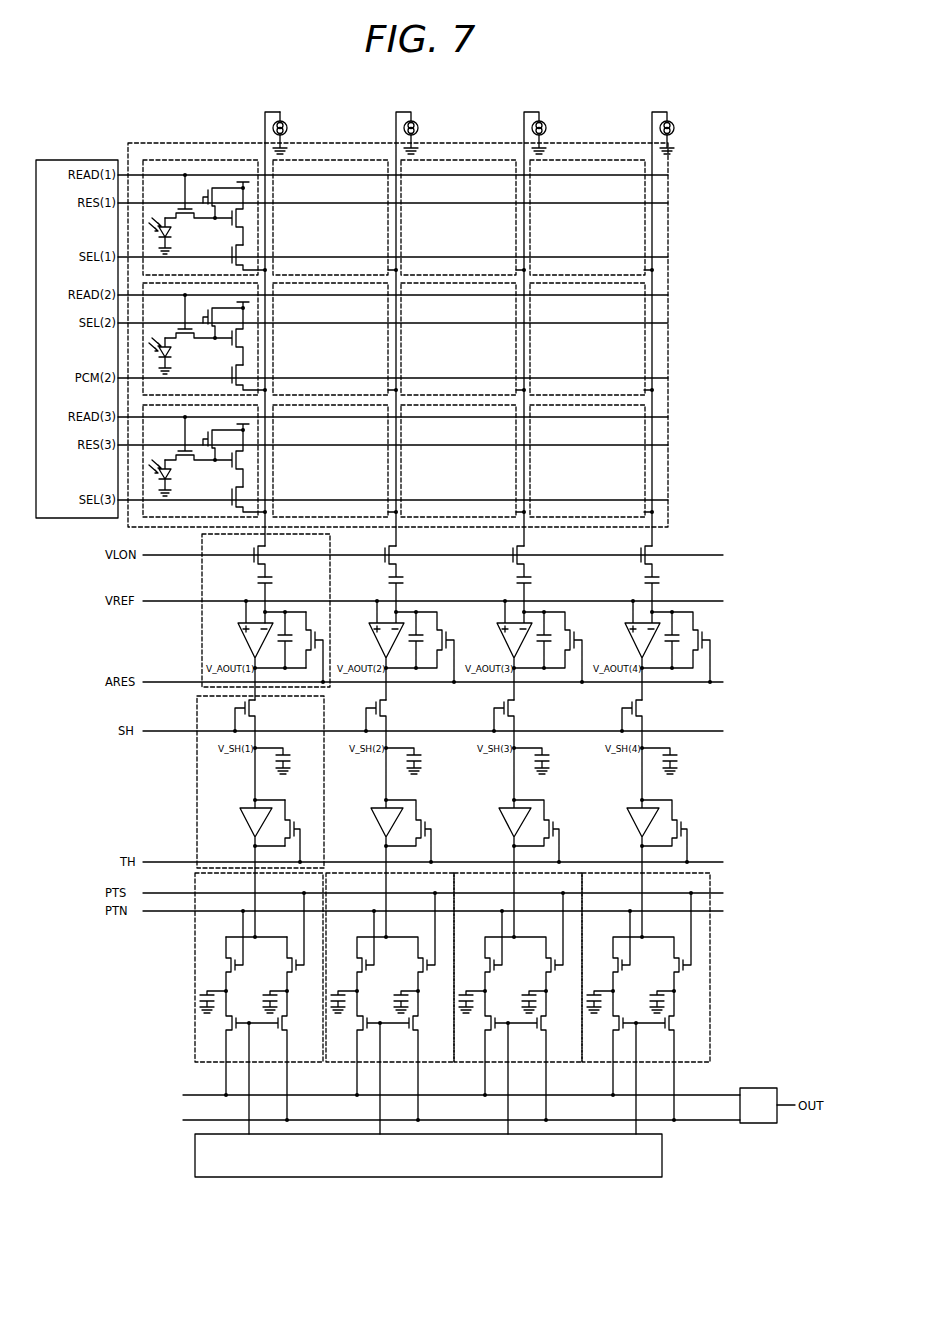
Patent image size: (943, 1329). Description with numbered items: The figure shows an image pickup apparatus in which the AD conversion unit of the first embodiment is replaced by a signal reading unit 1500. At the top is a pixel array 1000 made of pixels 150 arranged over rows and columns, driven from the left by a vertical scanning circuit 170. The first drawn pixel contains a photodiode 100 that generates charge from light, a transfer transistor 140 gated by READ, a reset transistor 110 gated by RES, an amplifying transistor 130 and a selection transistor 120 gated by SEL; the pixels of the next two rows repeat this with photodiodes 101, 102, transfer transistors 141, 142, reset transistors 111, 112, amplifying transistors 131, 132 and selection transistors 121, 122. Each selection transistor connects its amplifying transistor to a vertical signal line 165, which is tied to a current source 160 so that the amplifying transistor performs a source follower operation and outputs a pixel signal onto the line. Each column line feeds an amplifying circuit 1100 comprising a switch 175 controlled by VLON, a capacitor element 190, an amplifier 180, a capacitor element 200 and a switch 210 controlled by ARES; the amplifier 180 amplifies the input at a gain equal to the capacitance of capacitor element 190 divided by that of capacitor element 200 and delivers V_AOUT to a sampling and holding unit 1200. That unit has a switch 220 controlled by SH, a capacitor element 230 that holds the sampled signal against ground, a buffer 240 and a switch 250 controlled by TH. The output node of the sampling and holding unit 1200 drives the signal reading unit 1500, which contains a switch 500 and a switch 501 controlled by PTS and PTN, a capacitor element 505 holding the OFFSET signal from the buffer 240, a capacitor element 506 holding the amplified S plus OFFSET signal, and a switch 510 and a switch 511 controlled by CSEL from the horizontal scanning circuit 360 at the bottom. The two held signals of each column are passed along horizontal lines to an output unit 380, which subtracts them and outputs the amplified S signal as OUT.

The pixel array 1000 is at (158, 143).
The pixel 150 is at (172, 160).
The vertical signal line 165 is at (262, 116).
The current source 160 is at (283, 122).
The vertical scanning circuit 170 is at (36, 400).
The reset transistor 110 is at (207, 196).
The reset transistor 111 is at (219, 317).
The reset transistor 112 is at (219, 439).
The transfer transistor 140 is at (188, 217).
The transfer transistor 141 is at (190, 326).
The transfer transistor 142 is at (190, 448).
The amplifying transistor 130 is at (235, 222).
The amplifying transistor 131 is at (224, 336).
The amplifying transistor 132 is at (224, 458).
The photodiode 100 is at (169, 240).
The photodiode 101 is at (176, 356).
The photodiode 102 is at (176, 478).
The selection transistor 120 is at (234, 253).
The selection transistor 121 is at (236, 375).
The selection transistor 122 is at (236, 497).
The switch 175 is at (254, 553).
The capacitor element 190 is at (259, 581).
The capacitor element 200 is at (289, 630).
The amplifier 180 is at (238, 630).
The switch 210 is at (314, 634).
The amplifying circuit 1100 is at (202, 586).
The switch 220 is at (256, 709).
The capacitor element 230 is at (289, 758).
The buffer 240 is at (240, 815).
The switch 250 is at (297, 827).
The sampling and holding unit 1200 is at (197, 780).
The signal reading unit 1500 is at (195, 948).
The switch 500 is at (229, 967).
The switch 501 is at (289, 971).
The capacitor element 505 is at (205, 1000).
The capacitor element 506 is at (264, 1000).
The switch 510 is at (227, 1025).
The switch 511 is at (288, 1024).
The output unit 380 is at (767, 1105).
The horizontal scanning circuit 360 is at (338, 1177).